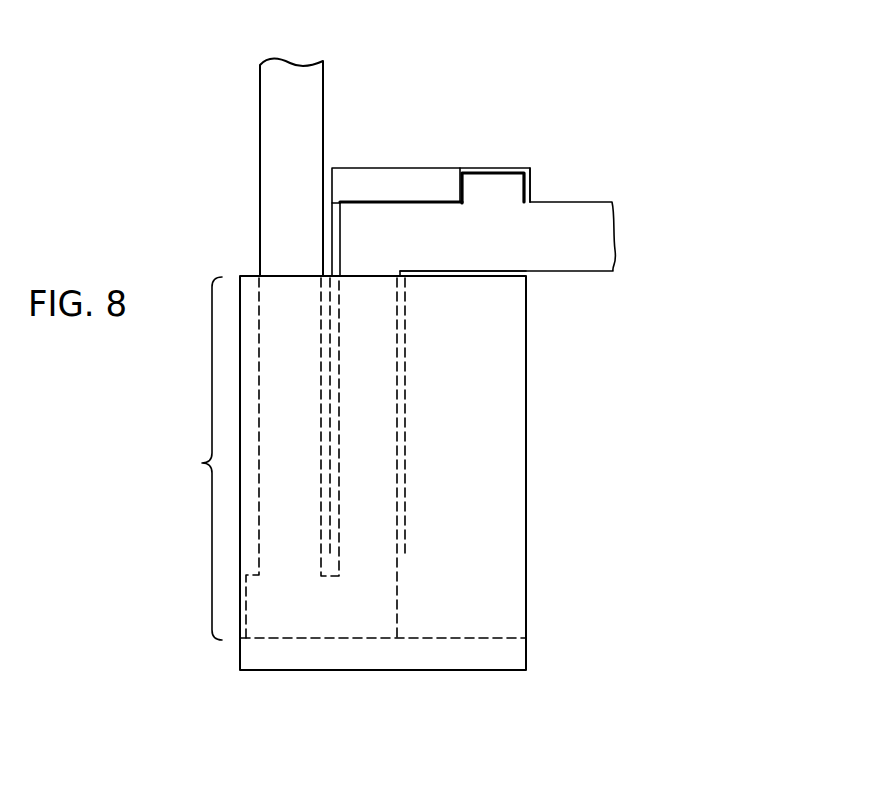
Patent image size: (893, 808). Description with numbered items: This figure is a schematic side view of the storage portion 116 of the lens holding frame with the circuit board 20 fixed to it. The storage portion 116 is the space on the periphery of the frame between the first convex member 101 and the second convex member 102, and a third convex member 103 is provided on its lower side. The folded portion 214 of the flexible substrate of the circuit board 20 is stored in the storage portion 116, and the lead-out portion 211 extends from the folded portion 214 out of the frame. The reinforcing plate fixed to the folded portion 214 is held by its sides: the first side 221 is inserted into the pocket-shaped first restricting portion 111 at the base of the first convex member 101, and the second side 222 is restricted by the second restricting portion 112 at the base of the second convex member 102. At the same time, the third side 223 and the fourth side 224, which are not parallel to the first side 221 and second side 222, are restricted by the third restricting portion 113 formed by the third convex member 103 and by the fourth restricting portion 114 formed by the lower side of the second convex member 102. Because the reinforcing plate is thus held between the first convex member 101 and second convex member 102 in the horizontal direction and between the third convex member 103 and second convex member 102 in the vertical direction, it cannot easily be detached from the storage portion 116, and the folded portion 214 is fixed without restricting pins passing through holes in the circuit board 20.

The circuit board 20 is at (280, 140).
The first convex member 101 is at (502, 568).
The second convex member 102 is at (408, 180).
The third convex member 103 is at (405, 493).
The first restricting portion 111 is at (333, 613).
The second restricting portion 112 is at (384, 204).
The third restricting portion 113 is at (393, 418).
The fourth restricting portion 114 is at (505, 168).
The storage portion 116 is at (380, 380).
The lead-out portion 211 is at (600, 237).
The folded portion 214 is at (189, 458).
The first side 221 is at (279, 642).
The second side 222 is at (358, 198).
The third side 223 is at (397, 597).
The fourth side 224 is at (457, 187).